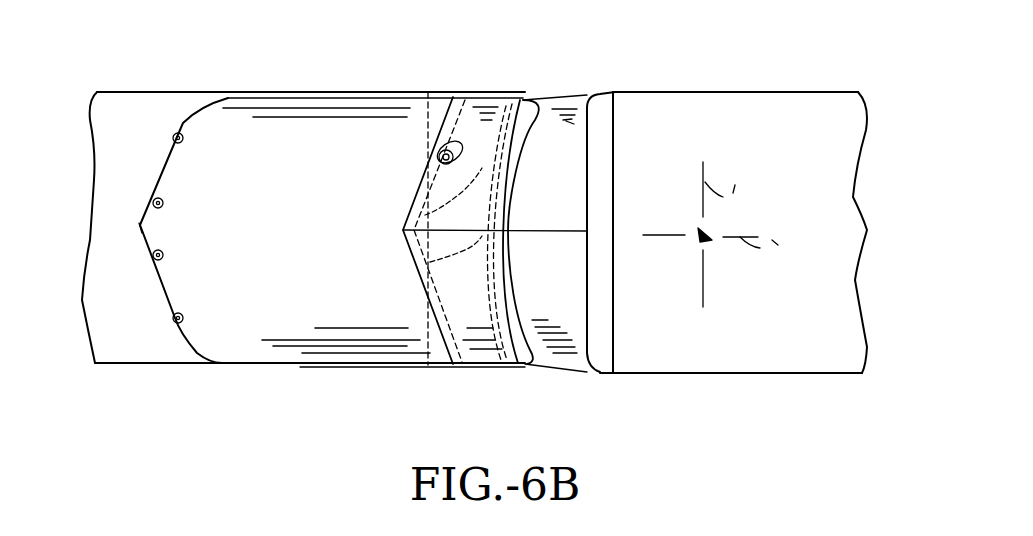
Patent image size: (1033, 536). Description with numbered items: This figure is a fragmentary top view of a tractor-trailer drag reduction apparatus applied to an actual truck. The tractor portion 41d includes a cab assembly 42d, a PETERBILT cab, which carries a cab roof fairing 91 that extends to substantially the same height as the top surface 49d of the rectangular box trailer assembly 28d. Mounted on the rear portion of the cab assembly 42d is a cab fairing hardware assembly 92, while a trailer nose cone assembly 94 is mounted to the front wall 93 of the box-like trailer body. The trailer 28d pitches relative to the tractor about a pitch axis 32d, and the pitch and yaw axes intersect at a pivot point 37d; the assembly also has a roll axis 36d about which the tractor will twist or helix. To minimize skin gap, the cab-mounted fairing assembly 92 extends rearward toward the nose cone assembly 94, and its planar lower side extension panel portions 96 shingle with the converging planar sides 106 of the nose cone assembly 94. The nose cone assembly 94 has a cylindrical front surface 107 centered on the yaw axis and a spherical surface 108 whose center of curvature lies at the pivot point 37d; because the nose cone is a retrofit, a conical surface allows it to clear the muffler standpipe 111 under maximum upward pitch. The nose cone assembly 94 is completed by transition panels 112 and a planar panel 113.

The tractor portion 41d is at (165, 83).
The cab assembly 42d is at (315, 97).
The cab roof fairing 91 is at (238, 262).
The cab fairing hardware assembly 92 is at (459, 283).
The front wall 93 is at (574, 210).
The trailer nose cone assembly 94 is at (568, 84).
The side extension panel portions 96 is at (512, 97).
The converging planar sides 106 is at (550, 97).
The cylindrical front surface 107 is at (412, 191).
The spherical surface 108 is at (407, 248).
The muffler standpipe 111 is at (432, 174).
The transition panels 112 is at (575, 93).
The planar panel 113 is at (595, 266).
The trailer assembly 28d is at (783, 84).
The pitch axis 32d is at (730, 173).
The roll axis 36d is at (768, 205).
The pivot point 37d is at (712, 239).
The top surface 49d is at (800, 331).